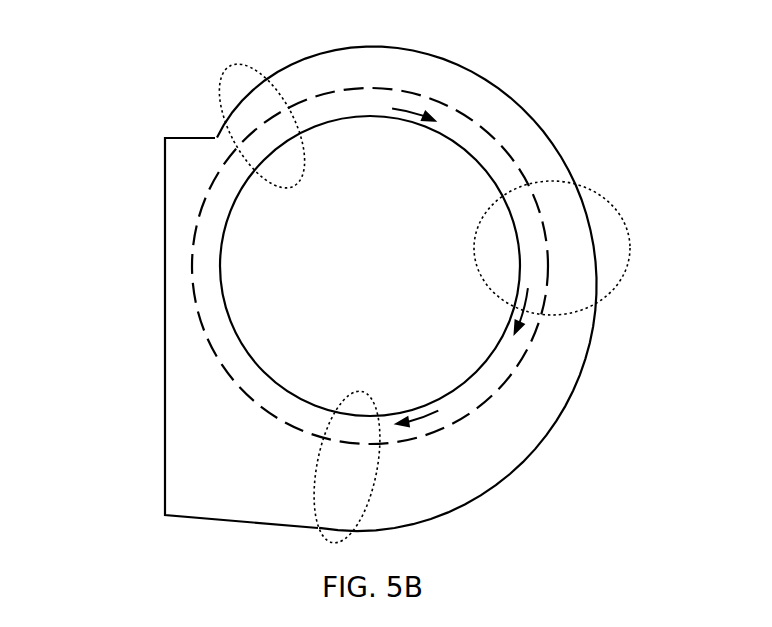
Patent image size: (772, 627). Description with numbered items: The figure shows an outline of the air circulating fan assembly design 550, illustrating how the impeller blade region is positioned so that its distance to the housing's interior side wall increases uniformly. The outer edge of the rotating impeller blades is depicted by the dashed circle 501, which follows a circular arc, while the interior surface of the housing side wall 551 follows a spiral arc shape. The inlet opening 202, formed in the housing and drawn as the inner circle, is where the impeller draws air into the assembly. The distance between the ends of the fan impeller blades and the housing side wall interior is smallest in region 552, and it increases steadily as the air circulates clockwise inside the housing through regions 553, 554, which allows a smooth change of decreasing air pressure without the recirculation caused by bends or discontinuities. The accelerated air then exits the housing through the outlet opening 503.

The inlet opening 202 is at (243, 158).
The outer edge of rotating impeller blades 501 is at (442, 94).
The fan outlet 503 is at (150, 331).
The fan assembly design 550 is at (647, 104).
The housing side wall 551 is at (581, 403).
The region 552 is at (264, 68).
The region 553 is at (639, 228).
The region 554 is at (309, 539).